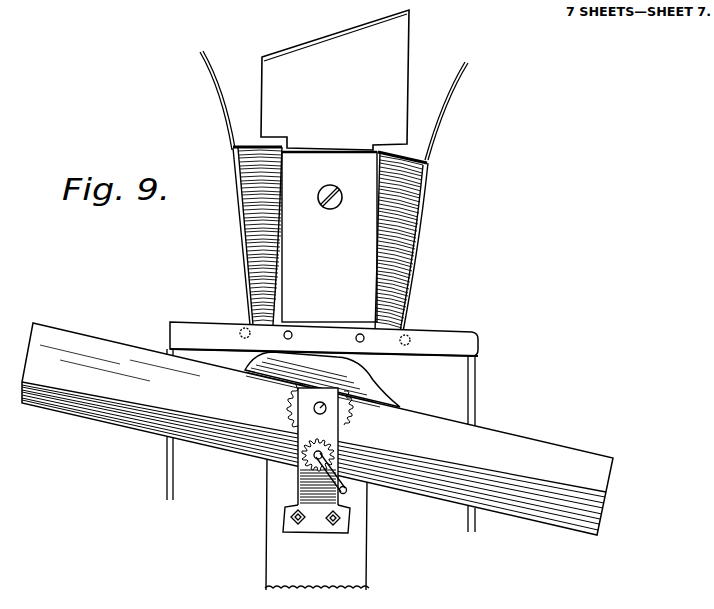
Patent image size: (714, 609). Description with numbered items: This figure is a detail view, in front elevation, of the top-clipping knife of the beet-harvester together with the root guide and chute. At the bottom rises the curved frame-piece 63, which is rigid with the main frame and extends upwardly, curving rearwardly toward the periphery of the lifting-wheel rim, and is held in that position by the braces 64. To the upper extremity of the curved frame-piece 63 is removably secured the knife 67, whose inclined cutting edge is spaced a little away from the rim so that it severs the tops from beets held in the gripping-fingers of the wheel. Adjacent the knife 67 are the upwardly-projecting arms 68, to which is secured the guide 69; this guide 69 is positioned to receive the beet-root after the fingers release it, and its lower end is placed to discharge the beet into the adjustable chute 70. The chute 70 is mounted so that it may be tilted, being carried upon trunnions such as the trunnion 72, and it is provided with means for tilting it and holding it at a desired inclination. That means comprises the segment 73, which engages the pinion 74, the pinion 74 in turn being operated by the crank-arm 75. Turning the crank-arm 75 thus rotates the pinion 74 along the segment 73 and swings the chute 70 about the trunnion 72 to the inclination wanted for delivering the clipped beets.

The curved frame-piece 63 is at (353, 571).
The braces 64 is at (482, 390).
The knife 67 is at (397, 73).
The upwardly-projecting arms 68 is at (307, 44).
The guide 69 is at (393, 235).
The adjustable chute 70 is at (317, 429).
The trunnion 72 is at (313, 408).
The segment 73 is at (355, 423).
The pinion 74 is at (307, 460).
The crank-arm 75 is at (347, 489).